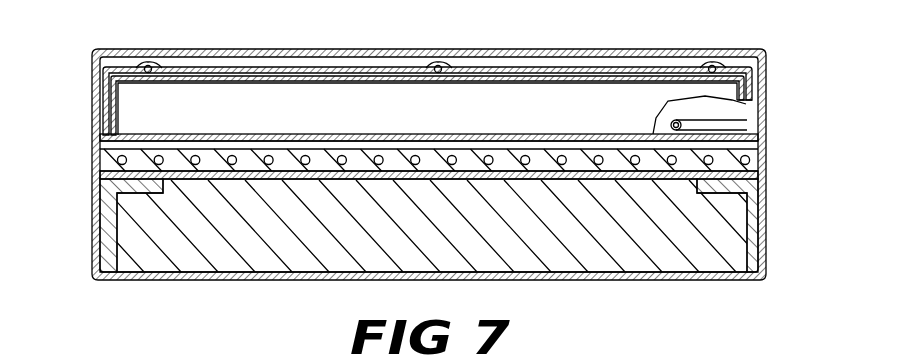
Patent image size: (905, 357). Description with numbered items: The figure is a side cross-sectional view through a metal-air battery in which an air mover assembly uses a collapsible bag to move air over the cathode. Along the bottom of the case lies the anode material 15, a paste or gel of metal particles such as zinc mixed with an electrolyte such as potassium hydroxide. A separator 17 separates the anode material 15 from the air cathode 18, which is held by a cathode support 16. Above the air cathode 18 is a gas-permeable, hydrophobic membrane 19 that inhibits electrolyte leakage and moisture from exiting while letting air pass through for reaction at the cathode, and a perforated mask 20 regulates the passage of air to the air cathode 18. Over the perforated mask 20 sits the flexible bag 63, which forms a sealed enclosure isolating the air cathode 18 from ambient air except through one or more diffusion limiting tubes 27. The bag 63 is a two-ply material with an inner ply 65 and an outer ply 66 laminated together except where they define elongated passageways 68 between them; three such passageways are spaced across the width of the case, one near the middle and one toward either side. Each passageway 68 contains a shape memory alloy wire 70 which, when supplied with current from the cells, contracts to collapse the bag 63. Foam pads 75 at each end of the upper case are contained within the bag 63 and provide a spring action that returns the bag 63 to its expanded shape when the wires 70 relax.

The anode material 15 is at (250, 252).
The cathode support 16 is at (110, 220).
The separator 17 is at (100, 178).
The air cathode 18 is at (104, 160).
The gas-permeable, hydrophobic membrane 19 is at (103, 145).
The perforated mask 20 is at (98, 138).
The diffusion limiting tube 27 is at (745, 120).
The flexible bag 63 is at (748, 84).
The inner ply 65 is at (347, 88).
The outer ply 66 is at (550, 70).
The elongated passageway 68 is at (612, 77).
The shape memory alloy wire 70 is at (148, 66).
The foam pad 75 is at (268, 108).